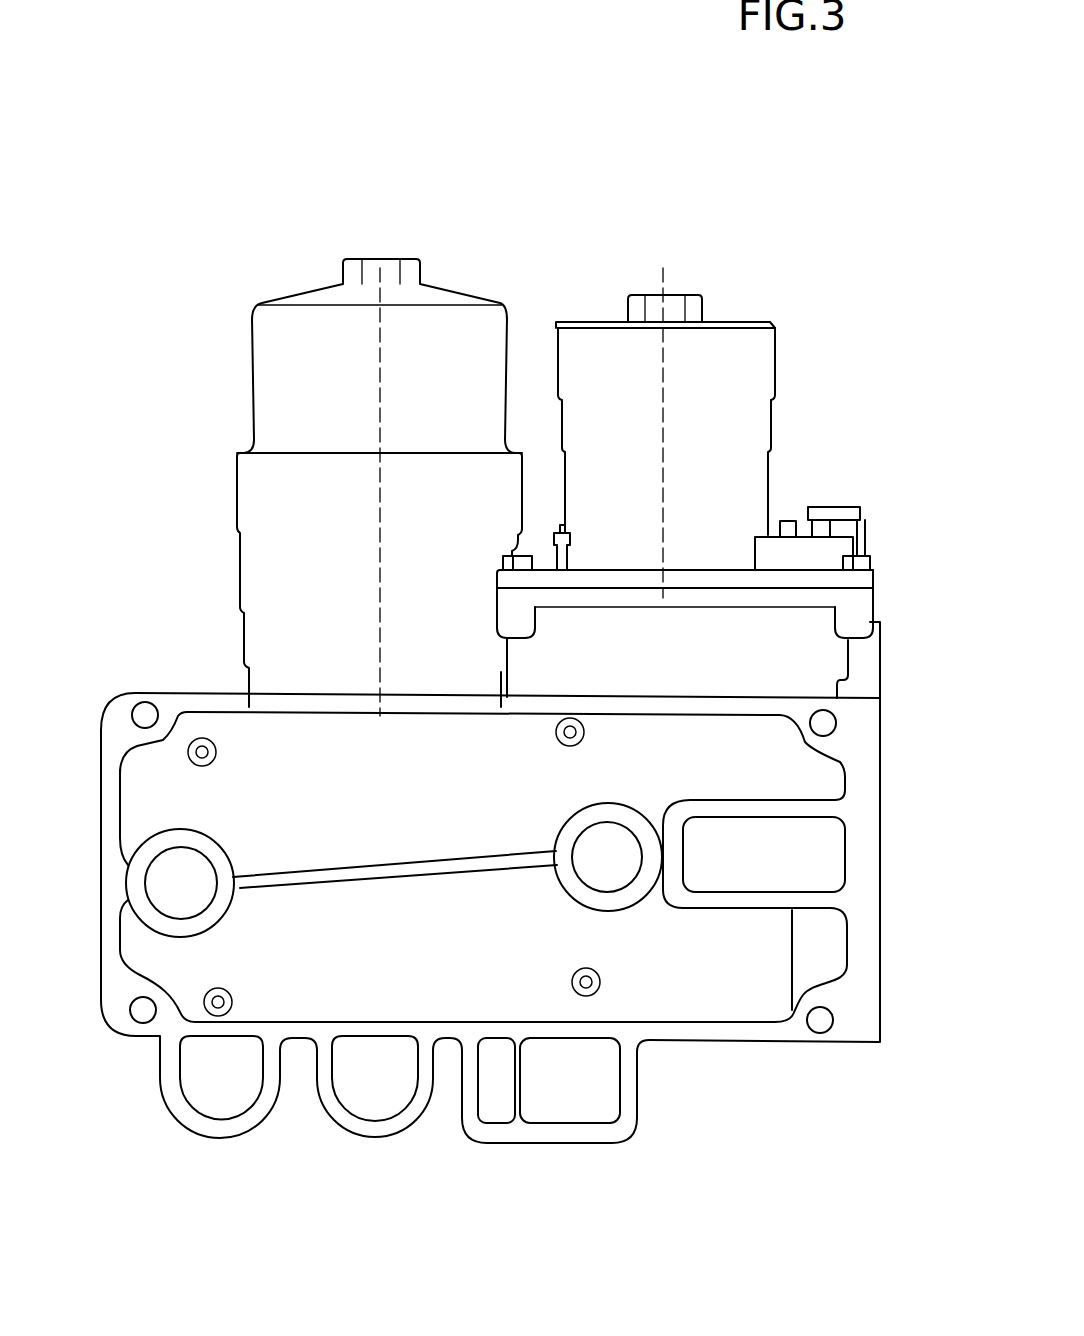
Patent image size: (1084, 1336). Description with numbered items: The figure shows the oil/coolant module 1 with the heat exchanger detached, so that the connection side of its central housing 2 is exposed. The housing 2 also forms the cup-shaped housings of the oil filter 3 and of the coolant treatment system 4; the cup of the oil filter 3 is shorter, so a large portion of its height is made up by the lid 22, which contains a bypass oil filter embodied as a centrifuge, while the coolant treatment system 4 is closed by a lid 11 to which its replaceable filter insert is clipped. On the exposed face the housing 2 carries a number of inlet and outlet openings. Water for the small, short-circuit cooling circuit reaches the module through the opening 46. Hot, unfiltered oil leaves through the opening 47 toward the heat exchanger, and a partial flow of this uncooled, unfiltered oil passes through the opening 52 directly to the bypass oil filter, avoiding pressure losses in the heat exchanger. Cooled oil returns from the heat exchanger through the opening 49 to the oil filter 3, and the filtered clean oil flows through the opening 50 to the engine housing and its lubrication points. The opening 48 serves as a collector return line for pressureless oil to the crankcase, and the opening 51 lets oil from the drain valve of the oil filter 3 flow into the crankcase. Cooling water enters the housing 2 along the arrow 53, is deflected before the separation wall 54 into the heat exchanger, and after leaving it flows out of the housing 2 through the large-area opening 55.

The oil/coolant module 1 is at (229, 343).
The central housing 2 is at (120, 735).
The oil filter 3 is at (272, 537).
The coolant treatment system 4 is at (752, 470).
The lid 11 is at (730, 320).
The lid 22 is at (328, 327).
The opening 46 is at (815, 858).
The opening 47 is at (172, 888).
The opening 48 is at (578, 1100).
The opening 49 is at (612, 860).
The opening 50 is at (382, 1080).
The opening 51 is at (498, 1097).
The opening 52 is at (220, 1078).
The arrow 53 is at (466, 992).
The separation wall 54 is at (293, 880).
The large-area opening 55 is at (268, 745).